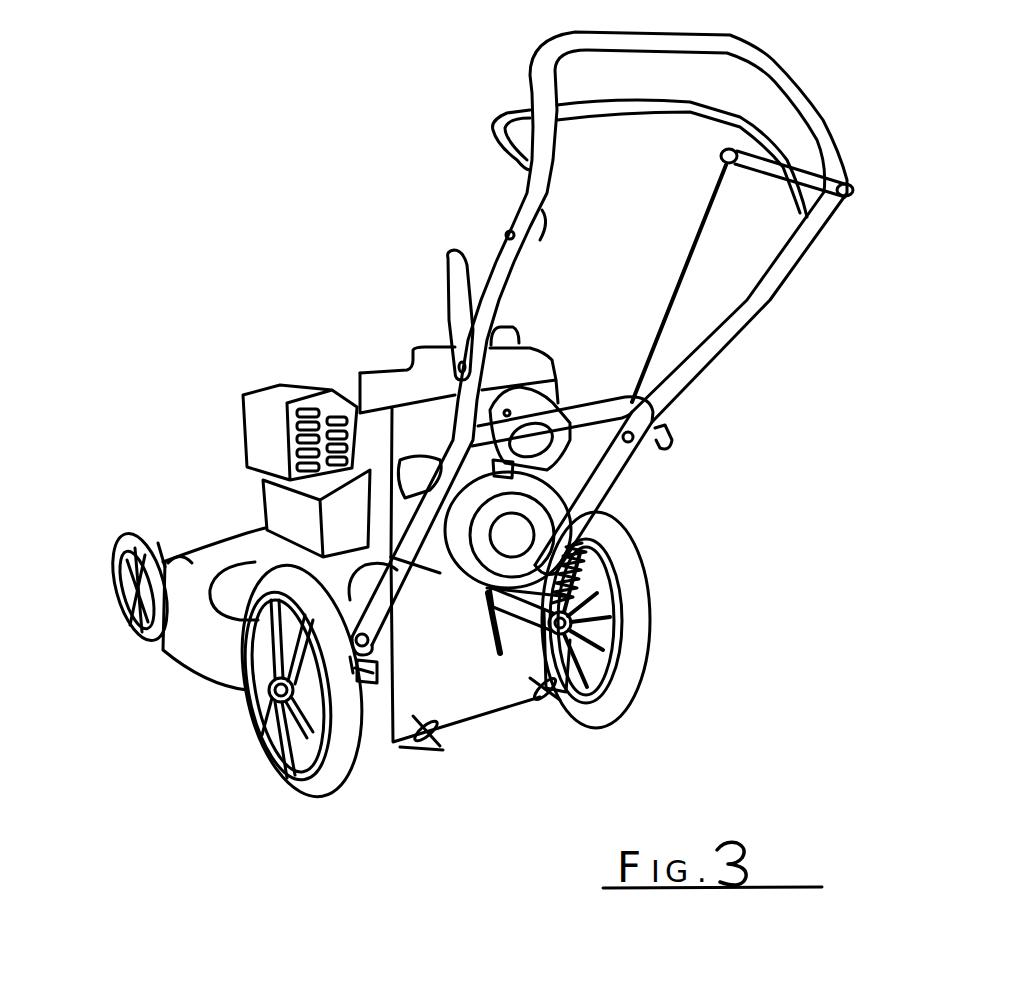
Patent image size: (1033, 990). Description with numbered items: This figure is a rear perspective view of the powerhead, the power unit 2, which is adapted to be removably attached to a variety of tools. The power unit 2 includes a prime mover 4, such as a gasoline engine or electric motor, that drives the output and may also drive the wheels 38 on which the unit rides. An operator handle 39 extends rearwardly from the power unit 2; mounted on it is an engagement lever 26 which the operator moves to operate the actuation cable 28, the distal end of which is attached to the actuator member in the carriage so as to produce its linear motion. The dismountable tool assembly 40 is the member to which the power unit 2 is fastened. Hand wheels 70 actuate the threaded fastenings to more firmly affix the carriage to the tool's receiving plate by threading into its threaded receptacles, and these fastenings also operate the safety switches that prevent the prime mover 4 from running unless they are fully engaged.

The power unit 2 is at (632, 500).
The prime mover 4 is at (573, 348).
The engagement lever 26 is at (493, 132).
The actuation cable 28 is at (690, 258).
The wheels 38 is at (283, 777).
The operator handle 39 is at (802, 68).
The tool assembly 40 is at (167, 663).
The hand wheels 70 is at (440, 752).